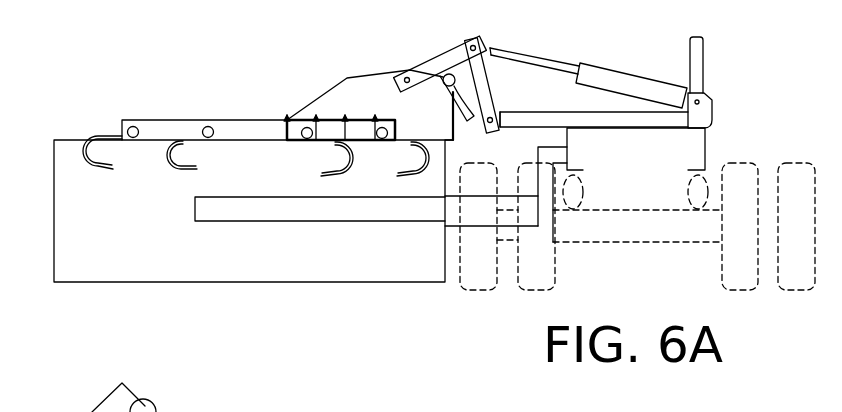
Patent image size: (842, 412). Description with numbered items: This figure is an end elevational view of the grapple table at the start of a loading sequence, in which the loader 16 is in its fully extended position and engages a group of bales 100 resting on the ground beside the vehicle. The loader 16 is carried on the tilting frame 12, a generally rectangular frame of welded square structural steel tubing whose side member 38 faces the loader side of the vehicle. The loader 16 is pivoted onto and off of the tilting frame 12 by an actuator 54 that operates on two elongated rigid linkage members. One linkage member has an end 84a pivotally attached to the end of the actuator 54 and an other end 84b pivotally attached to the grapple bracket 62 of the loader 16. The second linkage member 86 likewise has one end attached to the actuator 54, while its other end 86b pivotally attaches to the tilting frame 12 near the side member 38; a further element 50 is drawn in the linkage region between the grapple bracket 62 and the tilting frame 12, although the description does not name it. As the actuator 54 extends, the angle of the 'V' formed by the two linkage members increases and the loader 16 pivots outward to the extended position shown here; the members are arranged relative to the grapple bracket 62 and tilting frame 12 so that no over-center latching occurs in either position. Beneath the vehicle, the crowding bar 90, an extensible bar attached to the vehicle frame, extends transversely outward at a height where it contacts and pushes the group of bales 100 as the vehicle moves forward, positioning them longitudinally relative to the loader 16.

The loader 16 is at (186, 52).
The grapple bracket 62 is at (360, 76).
The end of linkage member 84 84a is at (472, 45).
The other end of linkage member 84 84b is at (406, 76).
The linkage member 86 is at (491, 81).
The other end of linkage member 86 86b is at (502, 111).
The pivot arm 50 is at (464, 108).
The side member 38 is at (503, 120).
The actuator 54 is at (607, 66).
The tilting frame 12 is at (620, 138).
The crowding bar 90 is at (280, 222).
The bales 100 is at (235, 282).